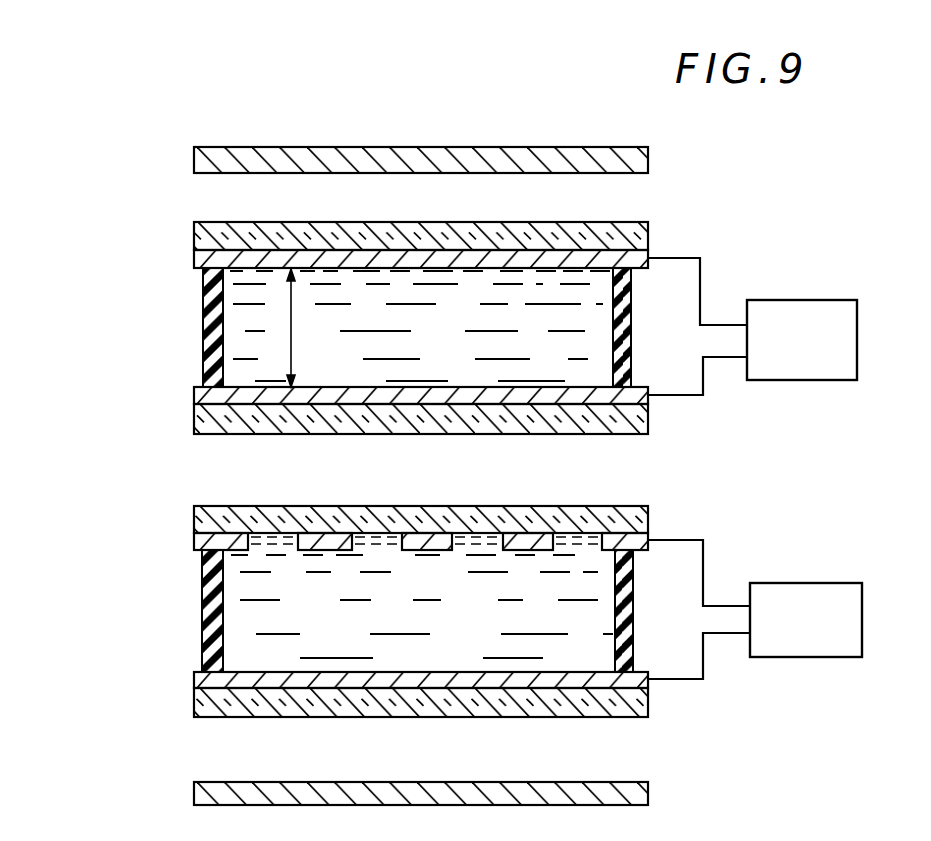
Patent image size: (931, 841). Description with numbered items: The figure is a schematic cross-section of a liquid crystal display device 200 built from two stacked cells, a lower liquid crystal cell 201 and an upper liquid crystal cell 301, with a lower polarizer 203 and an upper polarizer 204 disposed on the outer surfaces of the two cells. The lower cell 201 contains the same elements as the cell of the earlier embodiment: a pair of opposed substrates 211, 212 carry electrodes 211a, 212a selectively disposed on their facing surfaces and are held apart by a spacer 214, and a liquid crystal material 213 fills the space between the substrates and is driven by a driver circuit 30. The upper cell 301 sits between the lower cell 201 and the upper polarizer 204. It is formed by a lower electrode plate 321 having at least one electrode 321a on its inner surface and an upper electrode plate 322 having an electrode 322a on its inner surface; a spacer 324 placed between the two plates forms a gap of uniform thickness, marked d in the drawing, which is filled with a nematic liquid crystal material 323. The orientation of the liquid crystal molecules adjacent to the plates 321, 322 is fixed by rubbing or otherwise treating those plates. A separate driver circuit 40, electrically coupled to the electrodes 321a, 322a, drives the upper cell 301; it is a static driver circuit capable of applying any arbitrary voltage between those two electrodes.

The liquid crystal display device 200 is at (792, 193).
The upper polarizer 204 is at (194, 160).
The lower polarizer 203 is at (194, 795).
The upper liquid crystal cell 301 is at (63, 213).
The upper electrode plate 322 is at (194, 236).
The electrode 322a is at (194, 259).
The spacer 324 is at (212, 300).
The nematic liquid crystal material 323 is at (235, 331).
The electrode 321a is at (194, 397).
The lower electrode plate 321 is at (194, 425).
The driver circuit 40 is at (802, 303).
The lower liquid crystal cell 201 is at (63, 493).
The substrate 212 is at (194, 520).
The electrodes 212a is at (194, 544).
The spacer 214 is at (212, 584).
The liquid crystal material 213 is at (260, 610).
The electrode 211a is at (194, 681).
The substrate 211 is at (194, 702).
The driver circuit 30 is at (816, 590).